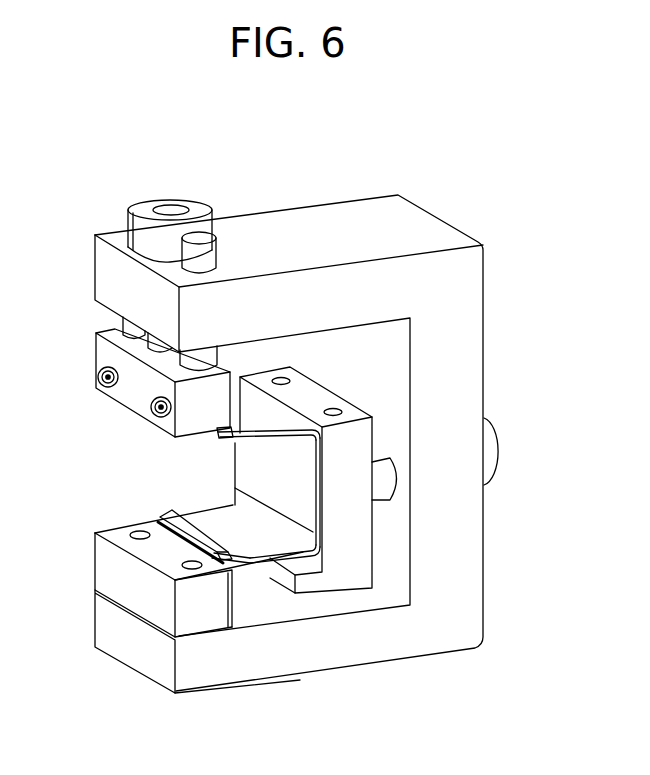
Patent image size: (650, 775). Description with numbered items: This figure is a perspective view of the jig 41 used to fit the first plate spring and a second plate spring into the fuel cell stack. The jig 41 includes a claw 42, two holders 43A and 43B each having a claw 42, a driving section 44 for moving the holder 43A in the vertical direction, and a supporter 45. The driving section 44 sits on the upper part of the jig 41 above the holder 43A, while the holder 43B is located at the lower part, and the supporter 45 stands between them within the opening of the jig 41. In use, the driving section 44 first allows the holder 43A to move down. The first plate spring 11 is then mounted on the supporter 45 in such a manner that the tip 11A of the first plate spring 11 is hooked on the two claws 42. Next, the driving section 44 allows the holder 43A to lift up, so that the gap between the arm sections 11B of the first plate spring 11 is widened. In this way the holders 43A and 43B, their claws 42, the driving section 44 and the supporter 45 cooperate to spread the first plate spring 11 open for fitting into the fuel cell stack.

The jig 41 is at (460, 197).
The driving section 44 is at (177, 198).
The holder 43A is at (95, 360).
The holder 43B is at (120, 580).
The claw 42 is at (140, 537).
The supporter 45 is at (358, 560).
The first plate spring 11 is at (190, 490).
The tip 11A is at (227, 575).
The arm sections 11B is at (250, 412).